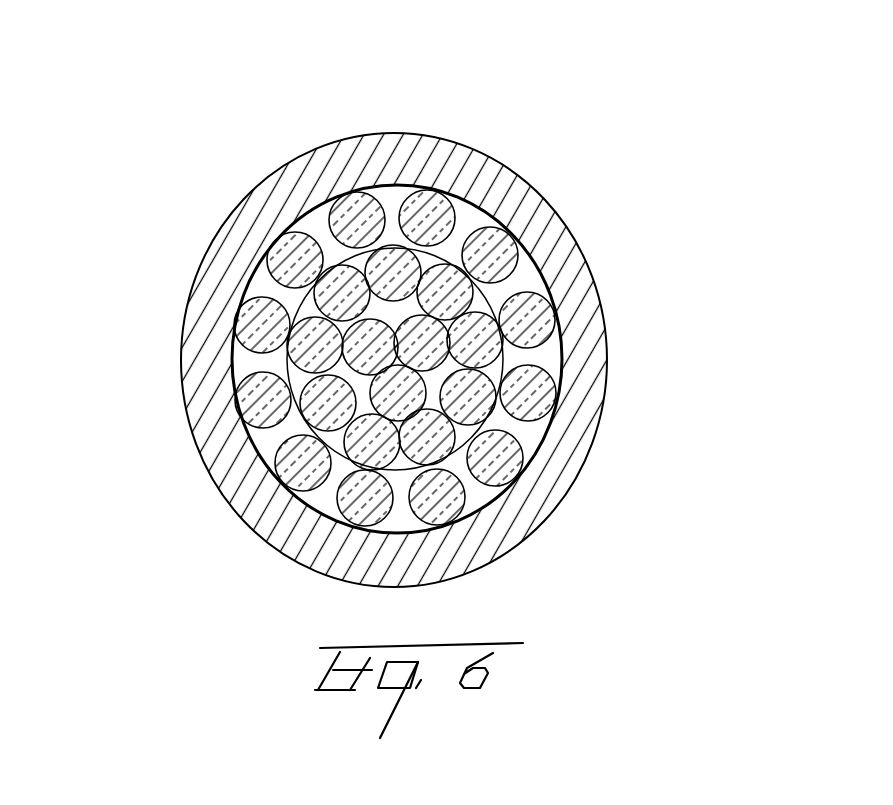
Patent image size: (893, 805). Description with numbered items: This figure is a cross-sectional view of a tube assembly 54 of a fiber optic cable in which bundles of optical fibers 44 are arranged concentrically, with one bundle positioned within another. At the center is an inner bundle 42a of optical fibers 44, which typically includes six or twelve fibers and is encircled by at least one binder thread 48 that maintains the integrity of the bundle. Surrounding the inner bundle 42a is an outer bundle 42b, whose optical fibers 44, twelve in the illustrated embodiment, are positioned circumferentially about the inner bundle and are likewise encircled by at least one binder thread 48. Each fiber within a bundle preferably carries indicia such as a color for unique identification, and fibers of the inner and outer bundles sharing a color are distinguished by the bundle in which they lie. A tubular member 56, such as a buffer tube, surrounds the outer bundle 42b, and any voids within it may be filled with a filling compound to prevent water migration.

The inner bundle 42a is at (323, 453).
The outer bundle 42b is at (322, 228).
The optical fibers 44 is at (515, 252).
The binder thread 48 is at (508, 352).
The tube assembly 54 is at (563, 123).
The tubular member 56 is at (573, 525).